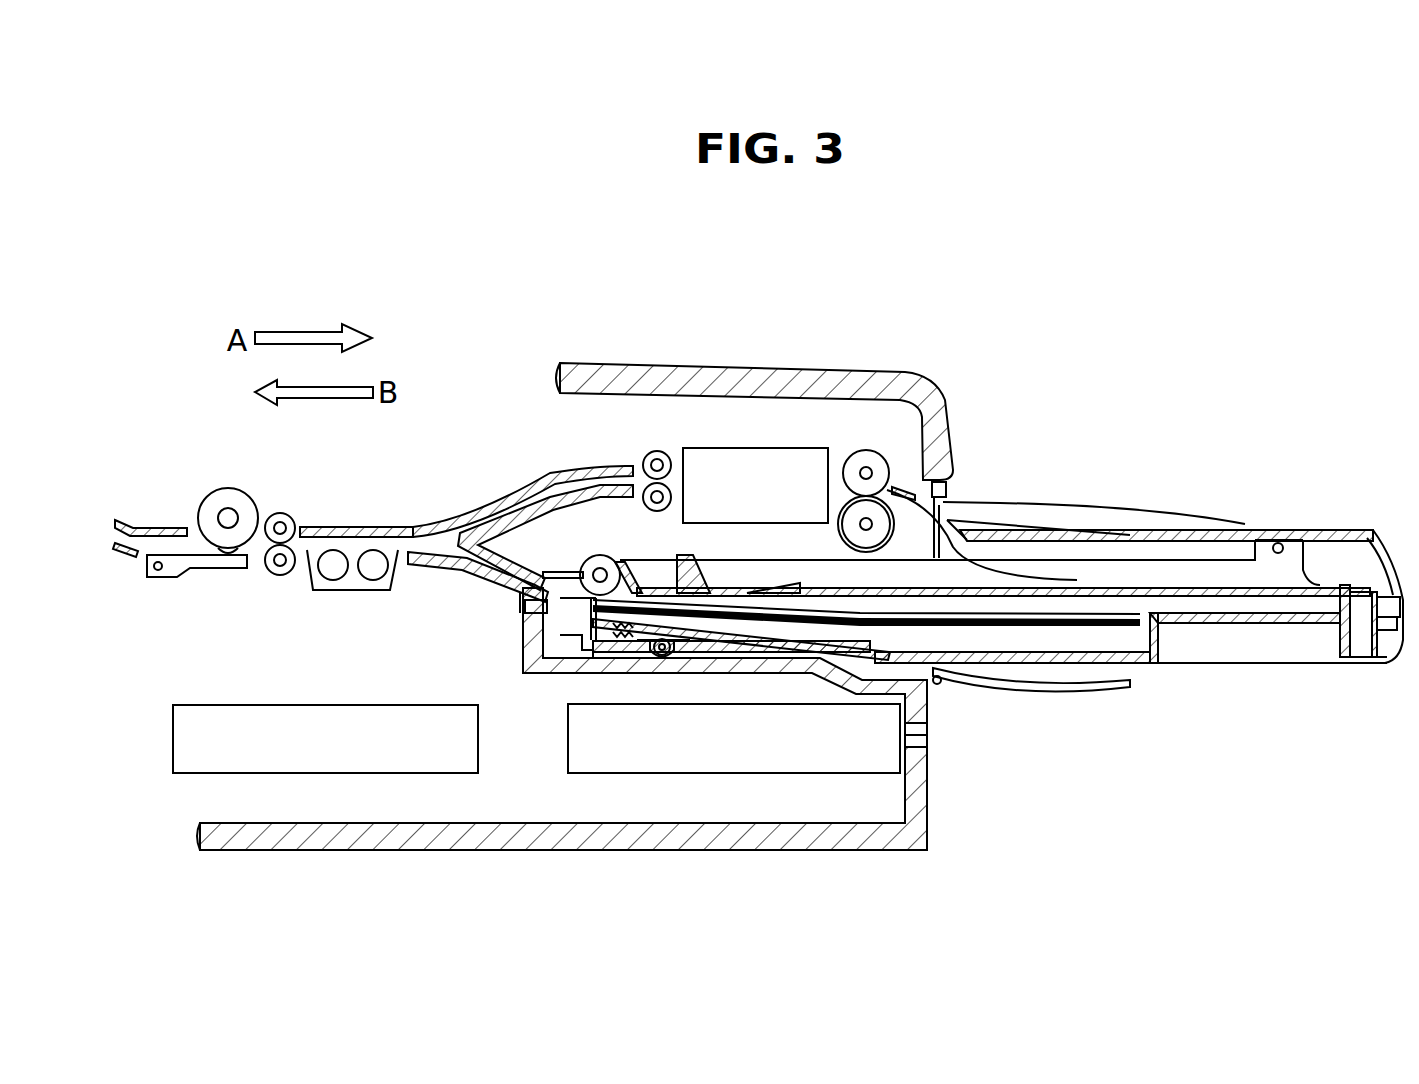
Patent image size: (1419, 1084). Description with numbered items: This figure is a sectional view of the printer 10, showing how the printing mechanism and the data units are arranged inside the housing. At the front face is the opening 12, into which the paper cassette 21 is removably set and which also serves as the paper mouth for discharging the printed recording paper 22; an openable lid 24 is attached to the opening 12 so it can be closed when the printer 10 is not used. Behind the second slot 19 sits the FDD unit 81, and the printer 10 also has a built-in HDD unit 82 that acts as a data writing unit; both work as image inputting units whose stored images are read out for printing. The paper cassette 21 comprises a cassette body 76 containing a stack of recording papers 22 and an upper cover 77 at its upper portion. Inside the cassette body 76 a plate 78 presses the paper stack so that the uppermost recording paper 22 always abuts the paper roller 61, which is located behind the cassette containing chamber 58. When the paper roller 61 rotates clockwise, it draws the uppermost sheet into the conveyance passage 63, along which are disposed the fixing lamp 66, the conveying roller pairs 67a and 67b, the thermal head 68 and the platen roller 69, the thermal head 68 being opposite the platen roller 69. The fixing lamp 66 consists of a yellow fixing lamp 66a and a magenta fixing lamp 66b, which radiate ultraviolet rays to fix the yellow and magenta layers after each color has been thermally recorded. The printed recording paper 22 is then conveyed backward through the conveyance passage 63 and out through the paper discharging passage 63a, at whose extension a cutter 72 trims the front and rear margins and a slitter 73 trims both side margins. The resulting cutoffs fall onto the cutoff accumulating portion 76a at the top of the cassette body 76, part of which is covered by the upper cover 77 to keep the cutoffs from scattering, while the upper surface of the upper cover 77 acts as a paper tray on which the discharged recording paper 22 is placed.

The printer 10 is at (631, 325).
The opening 12 is at (950, 490).
The second slot 19 is at (925, 737).
The paper cassette 21 is at (1167, 507).
The recording paper 22 is at (1003, 513).
The lid 24 is at (1118, 692).
The cassette containing chamber 58 is at (925, 703).
The paper roller 61 is at (600, 555).
The conveyance passage 63 is at (413, 548).
The paper discharging passage 63a is at (505, 505).
The fixing lamp 66 is at (360, 627).
The yellow fixing lamp 66a is at (328, 575).
The magenta fixing lamp 66b is at (375, 572).
The conveying roller pair 67a is at (280, 513).
The conveying roller pair 67b is at (655, 452).
The thermal head 68 is at (205, 572).
The platen roller 69 is at (229, 495).
The cutter 72 is at (752, 447).
The slitter 73 is at (866, 447).
The cassette body 76 is at (1268, 668).
The cutoff accumulating portion 76a is at (1128, 590).
The upper cover 77 is at (1295, 530).
The plate 78 is at (655, 655).
The FDD unit 81 is at (567, 742).
The HDD unit 82 is at (165, 700).